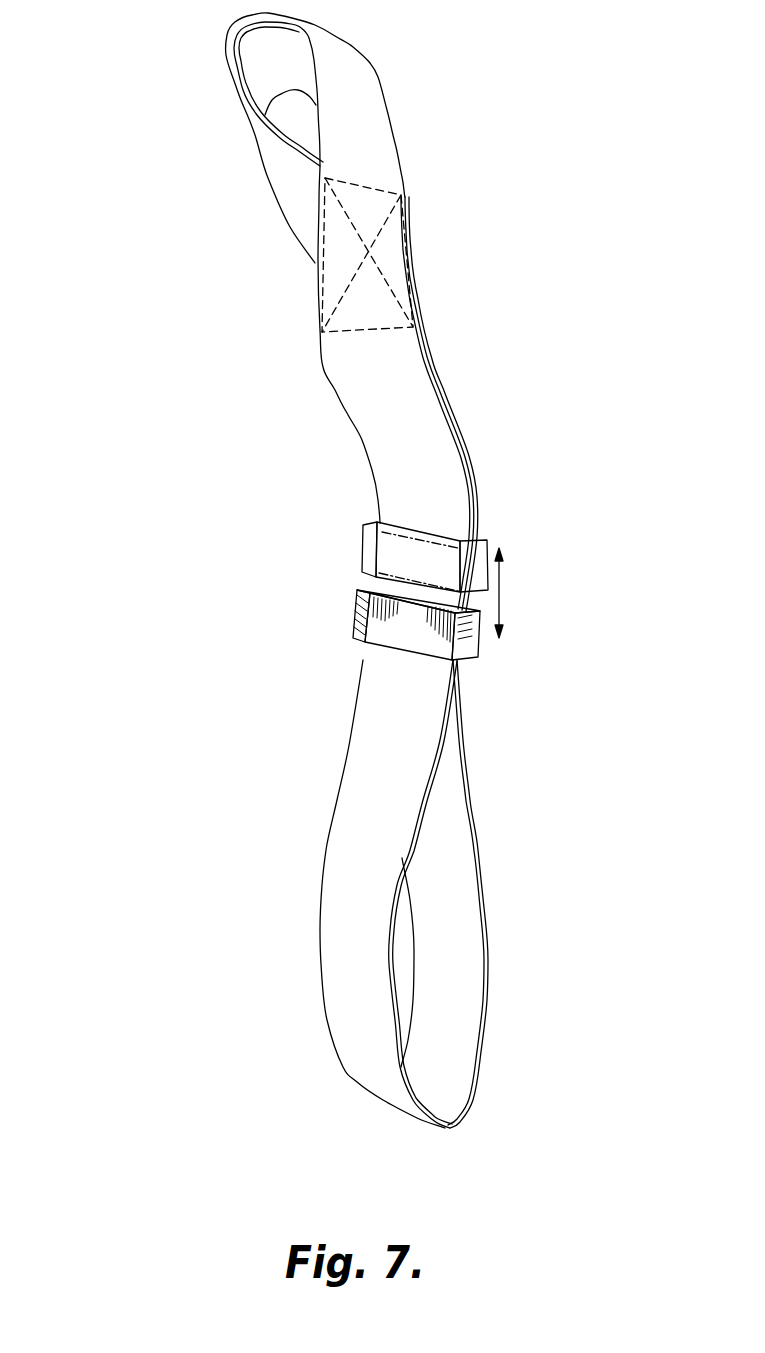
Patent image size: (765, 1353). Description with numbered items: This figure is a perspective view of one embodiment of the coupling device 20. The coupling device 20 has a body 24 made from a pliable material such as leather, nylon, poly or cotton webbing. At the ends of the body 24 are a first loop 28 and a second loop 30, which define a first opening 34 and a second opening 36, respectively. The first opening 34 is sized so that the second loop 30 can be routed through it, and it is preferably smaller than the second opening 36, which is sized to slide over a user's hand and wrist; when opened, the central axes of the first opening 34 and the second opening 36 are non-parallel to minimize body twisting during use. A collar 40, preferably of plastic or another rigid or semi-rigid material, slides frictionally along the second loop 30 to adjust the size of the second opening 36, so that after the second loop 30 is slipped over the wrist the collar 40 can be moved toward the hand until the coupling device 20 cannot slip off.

The coupling device 20 is at (226, 572).
The body 24 is at (465, 448).
The first loop 28 is at (228, 176).
The second loop 30 is at (484, 1050).
The first opening 34 is at (273, 68).
The second opening 36 is at (443, 952).
The collar 40 is at (360, 548).